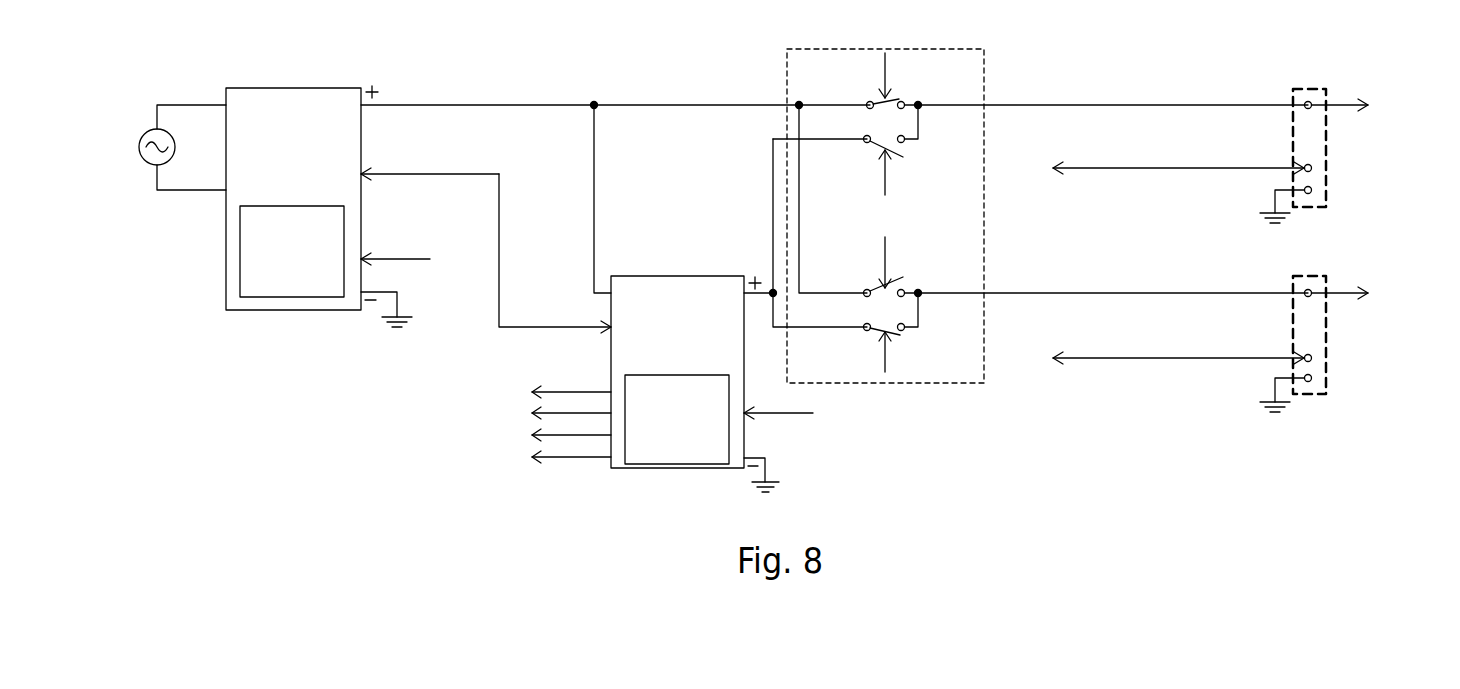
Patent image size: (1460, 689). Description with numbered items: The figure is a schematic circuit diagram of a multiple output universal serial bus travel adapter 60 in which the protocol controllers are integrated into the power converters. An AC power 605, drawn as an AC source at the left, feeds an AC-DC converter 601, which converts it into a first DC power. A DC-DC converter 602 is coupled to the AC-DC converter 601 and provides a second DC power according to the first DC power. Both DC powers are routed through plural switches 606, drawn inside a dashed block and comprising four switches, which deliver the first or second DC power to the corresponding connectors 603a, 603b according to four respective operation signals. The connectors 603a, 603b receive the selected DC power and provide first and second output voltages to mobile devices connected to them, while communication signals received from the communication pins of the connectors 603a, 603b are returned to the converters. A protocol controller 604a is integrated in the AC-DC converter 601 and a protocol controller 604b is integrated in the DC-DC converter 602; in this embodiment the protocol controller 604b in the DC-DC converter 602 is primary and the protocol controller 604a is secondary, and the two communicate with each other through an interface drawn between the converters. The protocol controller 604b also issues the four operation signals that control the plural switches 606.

The multiple output universal serial bus travel adapter 60 is at (508, 50).
The AC-DC converter 601 is at (316, 179).
The DC-DC converter 602 is at (697, 366).
The connector 603a is at (1307, 89).
The connector 603b is at (1307, 276).
The protocol controller 604a is at (320, 291).
The protocol controller 604b is at (700, 459).
The AC power 605 is at (142, 135).
The plural switches 606 is at (872, 49).